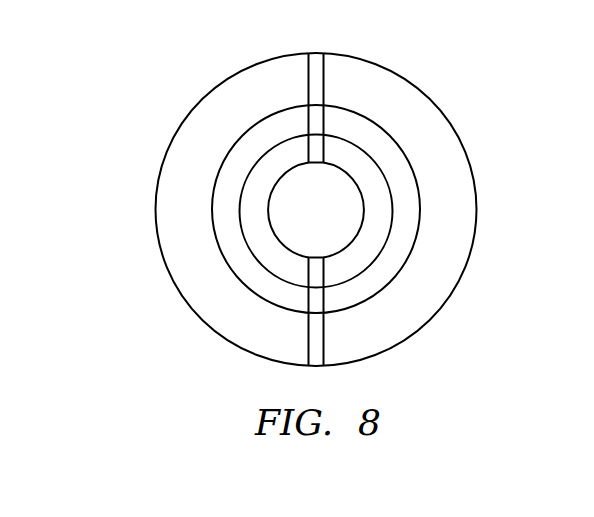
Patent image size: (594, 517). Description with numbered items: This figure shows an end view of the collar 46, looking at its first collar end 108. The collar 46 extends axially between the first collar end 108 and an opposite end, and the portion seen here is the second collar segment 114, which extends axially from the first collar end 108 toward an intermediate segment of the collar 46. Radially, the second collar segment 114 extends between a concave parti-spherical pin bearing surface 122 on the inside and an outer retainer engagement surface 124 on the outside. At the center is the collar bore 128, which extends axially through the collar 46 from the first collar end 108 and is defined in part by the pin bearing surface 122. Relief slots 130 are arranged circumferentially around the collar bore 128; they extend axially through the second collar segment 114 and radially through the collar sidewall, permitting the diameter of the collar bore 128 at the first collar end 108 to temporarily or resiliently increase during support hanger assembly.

The collar 46 is at (462, 90).
The first collar end 108 is at (452, 173).
The second collar segment 114 is at (475, 232).
The parti-spherical pin bearing surface 122 is at (242, 220).
The outer retainer engagement surface 124 is at (160, 165).
The collar bore 128 is at (338, 222).
The relief slots 130 is at (313, 61).